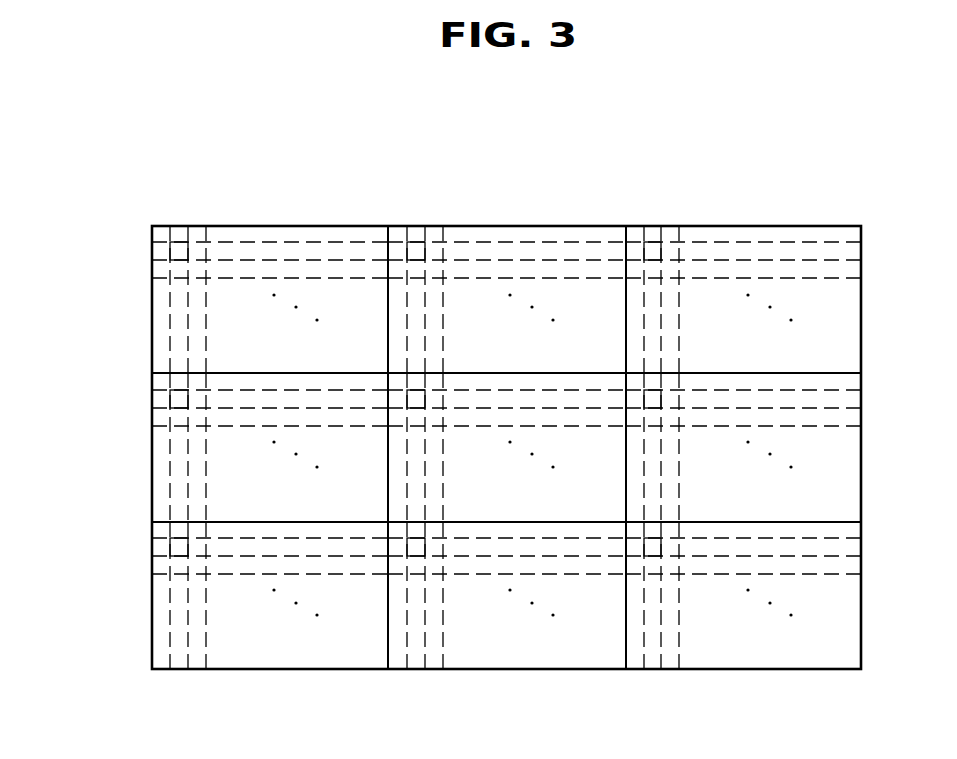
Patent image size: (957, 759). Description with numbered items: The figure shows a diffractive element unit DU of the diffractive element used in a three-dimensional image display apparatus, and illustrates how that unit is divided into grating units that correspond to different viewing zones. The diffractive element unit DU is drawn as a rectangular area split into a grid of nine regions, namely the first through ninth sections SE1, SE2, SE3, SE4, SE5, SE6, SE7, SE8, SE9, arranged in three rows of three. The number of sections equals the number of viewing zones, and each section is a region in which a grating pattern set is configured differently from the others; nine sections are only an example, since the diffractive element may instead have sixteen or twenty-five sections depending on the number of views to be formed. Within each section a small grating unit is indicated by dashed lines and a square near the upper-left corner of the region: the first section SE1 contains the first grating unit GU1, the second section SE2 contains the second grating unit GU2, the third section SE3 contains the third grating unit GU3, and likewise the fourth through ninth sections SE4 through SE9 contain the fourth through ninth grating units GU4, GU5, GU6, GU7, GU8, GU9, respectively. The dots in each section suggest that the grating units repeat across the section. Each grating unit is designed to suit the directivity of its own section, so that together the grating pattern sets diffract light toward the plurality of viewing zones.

The diffractive element unit DU is at (140, 212).
The first grating unit GU1 is at (163, 231).
The second grating unit GU2 is at (417, 231).
The third grating unit GU3 is at (668, 231).
The fourth grating unit GU4 is at (158, 402).
The fifth grating unit GU5 is at (415, 398).
The sixth grating unit GU6 is at (667, 398).
The seventh grating unit GU7 is at (163, 568).
The eighth grating unit GU8 is at (415, 570).
The ninth grating unit GU9 is at (669, 570).
The first section SE1 is at (321, 360).
The second section SE2 is at (557, 360).
The third section SE3 is at (795, 360).
The fourth section SE4 is at (321, 506).
The fifth section SE5 is at (557, 506).
The sixth section SE6 is at (795, 506).
The seventh section SE7 is at (321, 656).
The eighth section SE8 is at (557, 656).
The ninth section SE9 is at (795, 656).